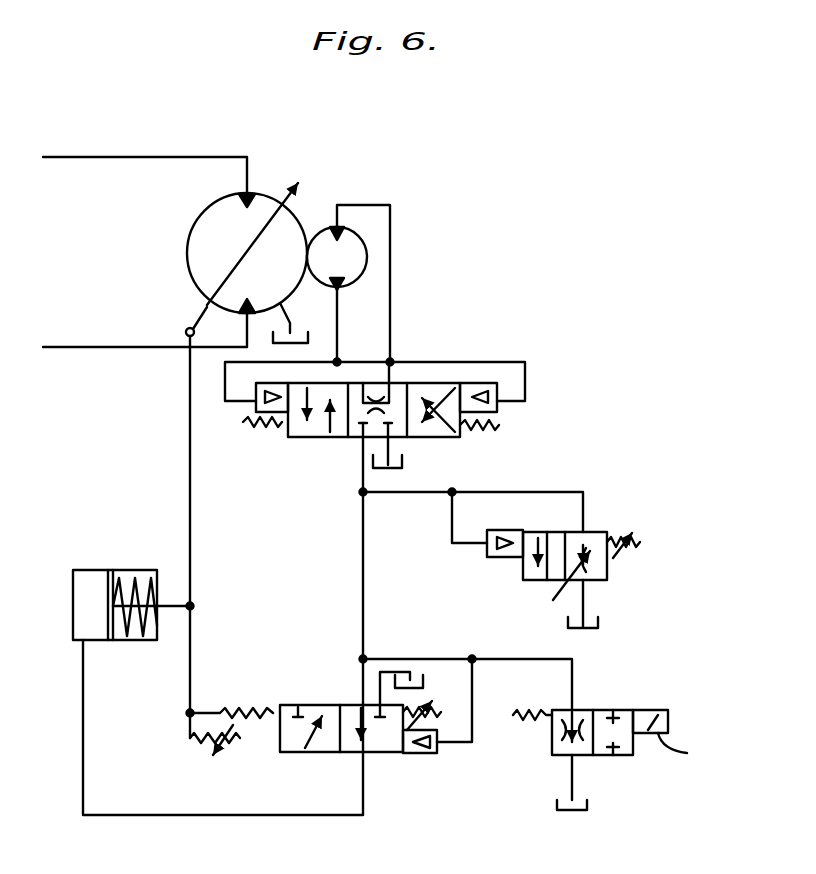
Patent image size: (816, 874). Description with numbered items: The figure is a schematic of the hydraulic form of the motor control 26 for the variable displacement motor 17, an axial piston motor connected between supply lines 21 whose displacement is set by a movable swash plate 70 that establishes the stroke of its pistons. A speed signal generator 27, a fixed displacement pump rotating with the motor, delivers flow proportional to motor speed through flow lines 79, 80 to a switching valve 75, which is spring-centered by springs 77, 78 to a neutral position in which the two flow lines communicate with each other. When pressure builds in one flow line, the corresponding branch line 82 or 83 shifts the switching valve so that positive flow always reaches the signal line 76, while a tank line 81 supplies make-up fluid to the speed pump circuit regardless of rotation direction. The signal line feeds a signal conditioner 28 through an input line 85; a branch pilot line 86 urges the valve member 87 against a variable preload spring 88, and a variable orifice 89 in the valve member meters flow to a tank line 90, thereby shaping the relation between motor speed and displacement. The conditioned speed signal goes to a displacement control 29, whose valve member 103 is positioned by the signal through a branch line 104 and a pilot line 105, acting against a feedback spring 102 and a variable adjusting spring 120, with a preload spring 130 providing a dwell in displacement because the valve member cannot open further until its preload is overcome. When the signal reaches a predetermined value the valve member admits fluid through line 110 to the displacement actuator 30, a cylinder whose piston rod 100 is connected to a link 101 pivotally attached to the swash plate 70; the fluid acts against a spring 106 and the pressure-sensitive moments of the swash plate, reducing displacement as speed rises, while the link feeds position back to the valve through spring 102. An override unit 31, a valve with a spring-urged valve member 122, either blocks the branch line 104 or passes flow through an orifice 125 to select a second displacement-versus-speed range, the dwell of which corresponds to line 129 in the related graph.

The hydraulic supply lines 21 is at (137, 157).
The variable displacement motor 17 is at (195, 240).
The swash plate 70 is at (203, 310).
The speed signal generator 27 is at (320, 233).
The flow line 79 is at (337, 312).
The flow line 80 is at (390, 307).
The branch line 83 is at (453, 362).
The motor control 26 is at (562, 342).
The switching valve 75 is at (515, 442).
The branch line 82 is at (230, 385).
The spring 77 is at (272, 437).
The spring 78 is at (503, 425).
The tank line 81 is at (388, 447).
The signal line 76 is at (358, 462).
The input line 85 is at (553, 493).
The branch pilot line 86 is at (452, 525).
The signal conditioner 28 is at (615, 506).
The valve member 87 is at (610, 578).
The variable preload spring 88 is at (640, 548).
The orifice 89 is at (548, 587).
The tank line 90 is at (587, 596).
The link 101 is at (190, 547).
The displacement actuator 30 is at (92, 560).
The spring 106 is at (137, 632).
The piston rod 100 is at (172, 608).
The spring 102 is at (242, 710).
The spring 130 is at (200, 743).
The displacement control 29 is at (408, 785).
The valve member 103 is at (290, 752).
The spring 120 is at (440, 720).
The orifice 125 is at (563, 737).
The branch line 104 is at (428, 657).
The pilot line 105 is at (472, 682).
The line 110 is at (223, 815).
The override unit 31 is at (635, 790).
The valve member 122 is at (627, 712).
The line 129 is at (697, 753).